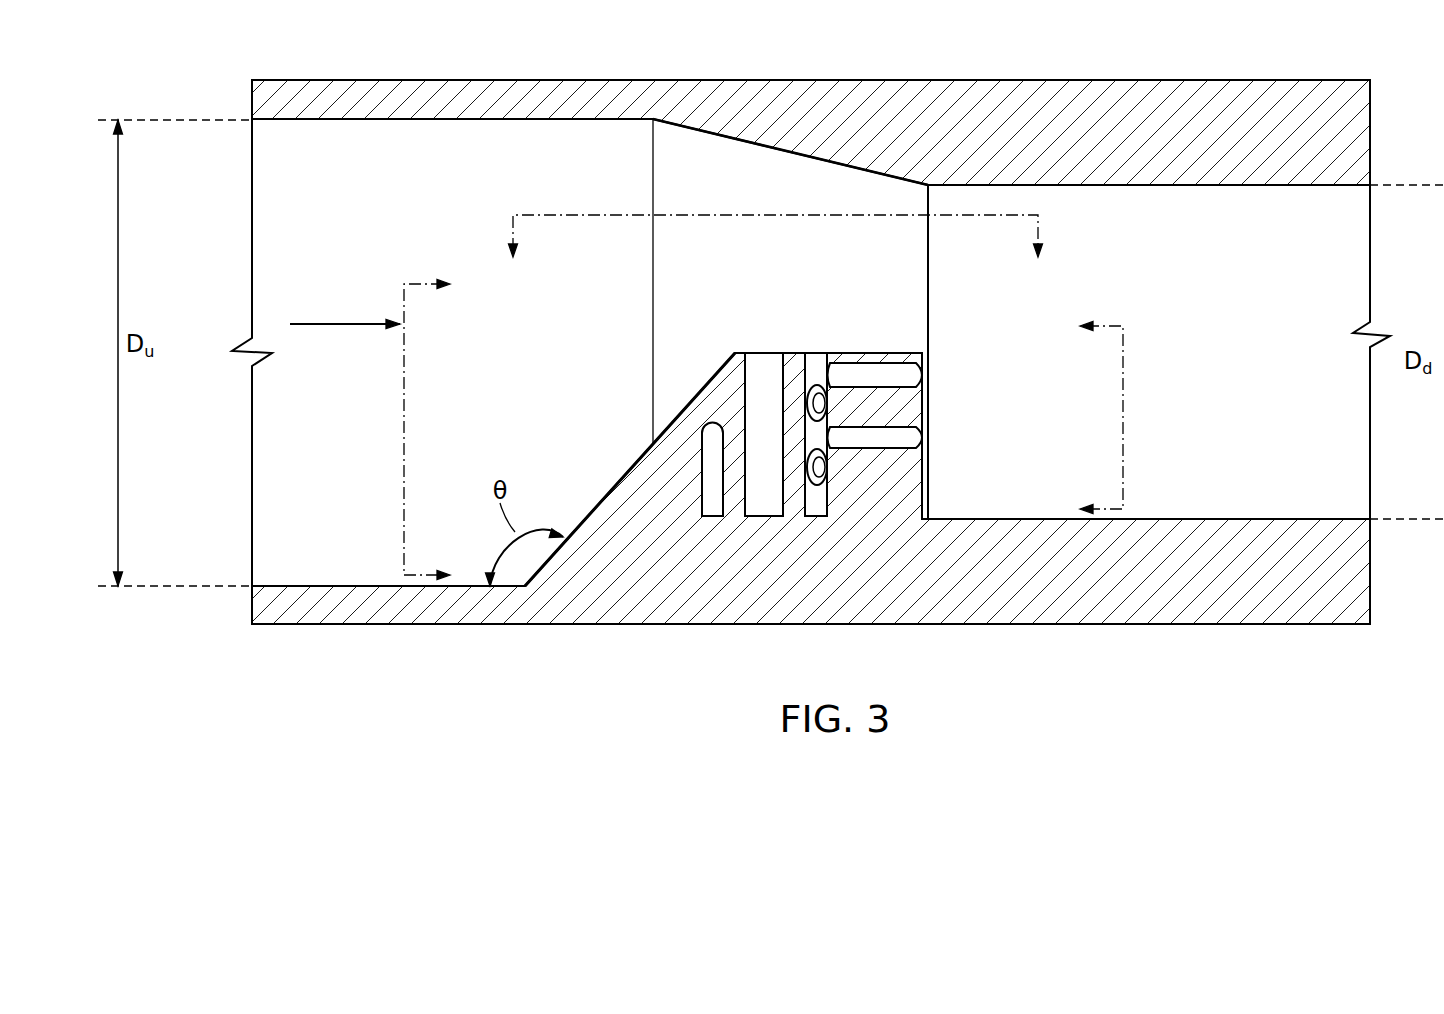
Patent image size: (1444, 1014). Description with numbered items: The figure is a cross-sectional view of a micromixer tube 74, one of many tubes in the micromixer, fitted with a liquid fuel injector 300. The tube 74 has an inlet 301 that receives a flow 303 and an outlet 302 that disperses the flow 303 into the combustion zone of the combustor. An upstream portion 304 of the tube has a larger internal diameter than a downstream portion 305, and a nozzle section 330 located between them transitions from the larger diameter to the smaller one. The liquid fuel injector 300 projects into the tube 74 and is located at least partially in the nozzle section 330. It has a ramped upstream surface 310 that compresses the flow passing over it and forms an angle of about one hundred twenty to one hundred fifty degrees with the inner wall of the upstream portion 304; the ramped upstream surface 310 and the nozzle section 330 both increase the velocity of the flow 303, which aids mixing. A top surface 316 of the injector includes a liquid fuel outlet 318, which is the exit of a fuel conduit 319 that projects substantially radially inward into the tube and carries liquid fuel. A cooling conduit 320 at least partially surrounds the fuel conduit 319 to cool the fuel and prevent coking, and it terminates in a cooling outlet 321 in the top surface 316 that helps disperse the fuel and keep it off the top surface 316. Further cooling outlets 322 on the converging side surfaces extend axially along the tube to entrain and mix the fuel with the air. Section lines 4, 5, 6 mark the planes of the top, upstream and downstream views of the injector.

The micromixer tube 74 is at (590, 55).
The nozzle section 330 is at (810, 152).
The liquid fuel injector 300 is at (888, 287).
The inlet 301 is at (252, 425).
The outlet 302 is at (1360, 386).
The flow 303 is at (318, 322).
The upstream portion 304 is at (318, 585).
The downstream portion 305 is at (1305, 502).
The ramped upstream surface 310 is at (632, 462).
The top surface 316 is at (890, 353).
The liquid fuel outlet 318 is at (762, 355).
The fuel conduit 319 is at (770, 505).
The cooling conduit 320 is at (712, 505).
The cooling outlet 321 is at (820, 353).
The cooling outlets 322 is at (910, 377).
The section line 4- 4 is at (775, 252).
The section line 5- 5 is at (437, 430).
The section line 6- 6 is at (1091, 418).